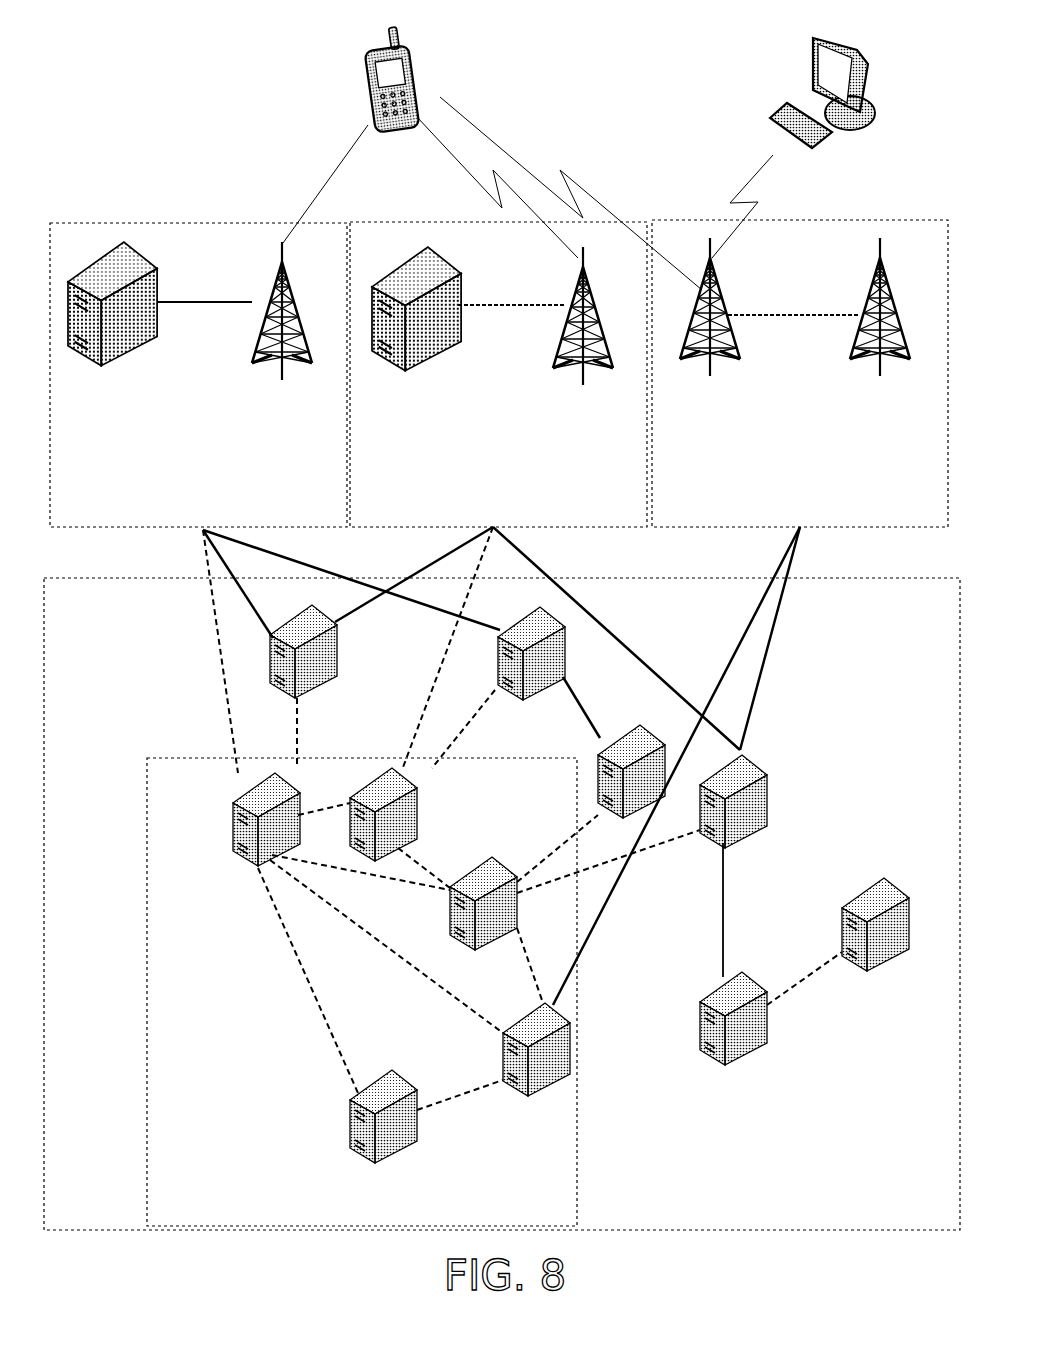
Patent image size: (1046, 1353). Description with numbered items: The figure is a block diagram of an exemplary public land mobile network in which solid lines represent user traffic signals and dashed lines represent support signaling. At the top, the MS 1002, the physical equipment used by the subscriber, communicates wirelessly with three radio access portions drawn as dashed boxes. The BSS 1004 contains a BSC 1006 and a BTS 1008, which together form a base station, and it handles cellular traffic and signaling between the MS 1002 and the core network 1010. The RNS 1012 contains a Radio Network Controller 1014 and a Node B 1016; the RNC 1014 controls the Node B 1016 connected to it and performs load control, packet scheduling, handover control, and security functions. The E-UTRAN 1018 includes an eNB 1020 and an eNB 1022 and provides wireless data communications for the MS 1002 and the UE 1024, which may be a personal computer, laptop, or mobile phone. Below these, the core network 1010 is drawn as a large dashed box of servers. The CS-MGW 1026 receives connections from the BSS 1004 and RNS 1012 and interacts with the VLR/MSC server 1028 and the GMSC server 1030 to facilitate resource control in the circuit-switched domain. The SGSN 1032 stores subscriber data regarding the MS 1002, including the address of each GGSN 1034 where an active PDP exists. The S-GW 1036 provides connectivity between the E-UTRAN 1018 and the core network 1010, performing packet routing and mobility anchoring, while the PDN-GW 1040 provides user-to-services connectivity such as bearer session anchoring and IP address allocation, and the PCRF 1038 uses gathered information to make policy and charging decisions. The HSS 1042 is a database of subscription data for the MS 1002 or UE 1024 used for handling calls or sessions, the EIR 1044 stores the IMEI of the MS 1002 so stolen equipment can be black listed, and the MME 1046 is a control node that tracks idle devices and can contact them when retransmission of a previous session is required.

The MS 1002 is at (391, 110).
The BSS 1004 is at (198, 375).
The BSC 1006 is at (112, 335).
The BTS 1008 is at (282, 342).
The core network 1010 is at (502, 904).
The RNS 1012 is at (498, 374).
The Radio Network Controller 1014 is at (416, 339).
The Node B 1016 is at (583, 347).
The E-UTRA Network 1018 is at (800, 373).
The E-UTRAN Node B 1020 is at (710, 336).
The E-UTRAN Node B 1022 is at (880, 335).
The user equipment 1024 is at (822, 108).
The circuit-switched MGW function 1026 is at (348, 651).
The VLR/MSC server 1028 is at (227, 819).
The GMSC server 1030 is at (413, 814).
The SGSN 1032 is at (531, 683).
The GGSN 1034 is at (631, 749).
The serving gateway 1036 is at (765, 795).
The PCRF 1038 is at (875, 955).
The PDN gateway 1040 is at (733, 1048).
The HSS 1042 is at (482, 933).
The EIR 1044 is at (383, 1146).
The MME 1046 is at (536, 1078).